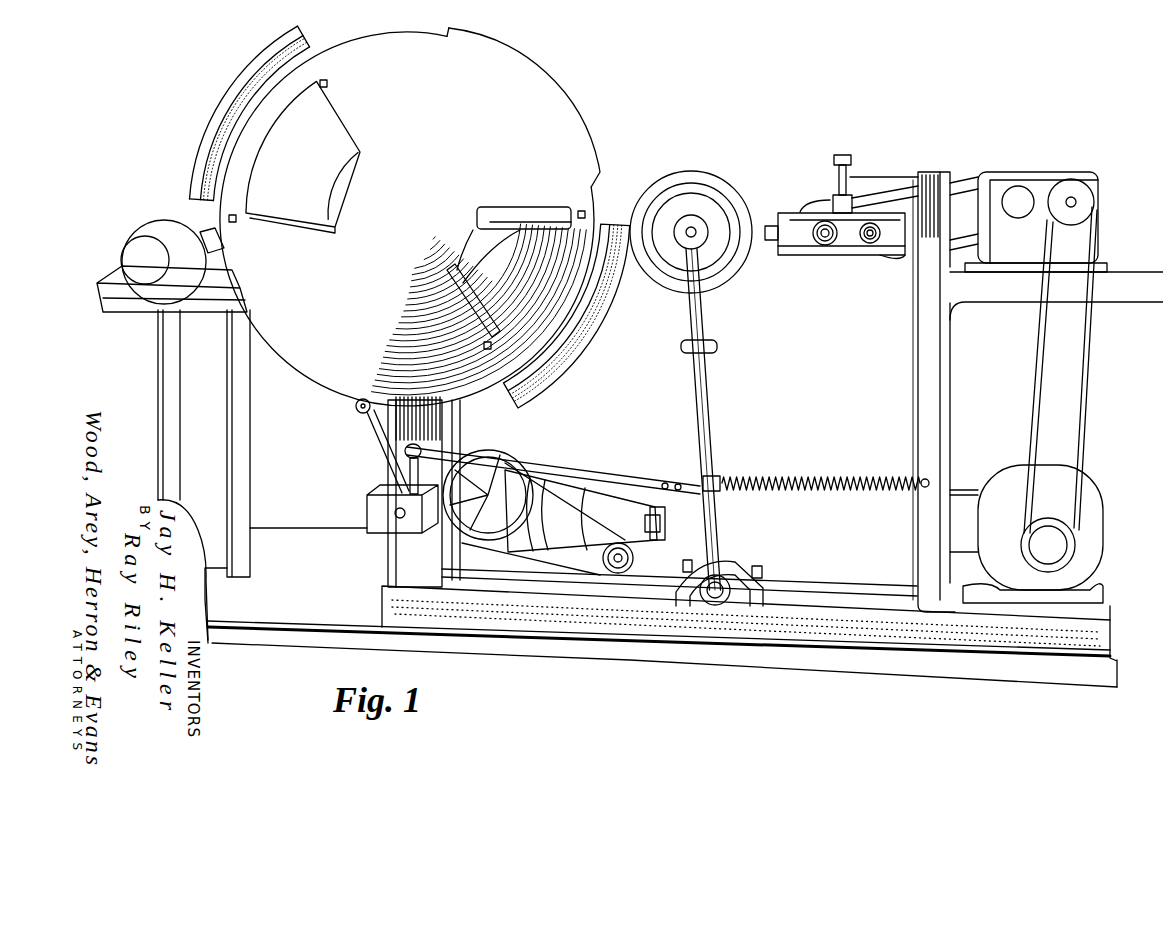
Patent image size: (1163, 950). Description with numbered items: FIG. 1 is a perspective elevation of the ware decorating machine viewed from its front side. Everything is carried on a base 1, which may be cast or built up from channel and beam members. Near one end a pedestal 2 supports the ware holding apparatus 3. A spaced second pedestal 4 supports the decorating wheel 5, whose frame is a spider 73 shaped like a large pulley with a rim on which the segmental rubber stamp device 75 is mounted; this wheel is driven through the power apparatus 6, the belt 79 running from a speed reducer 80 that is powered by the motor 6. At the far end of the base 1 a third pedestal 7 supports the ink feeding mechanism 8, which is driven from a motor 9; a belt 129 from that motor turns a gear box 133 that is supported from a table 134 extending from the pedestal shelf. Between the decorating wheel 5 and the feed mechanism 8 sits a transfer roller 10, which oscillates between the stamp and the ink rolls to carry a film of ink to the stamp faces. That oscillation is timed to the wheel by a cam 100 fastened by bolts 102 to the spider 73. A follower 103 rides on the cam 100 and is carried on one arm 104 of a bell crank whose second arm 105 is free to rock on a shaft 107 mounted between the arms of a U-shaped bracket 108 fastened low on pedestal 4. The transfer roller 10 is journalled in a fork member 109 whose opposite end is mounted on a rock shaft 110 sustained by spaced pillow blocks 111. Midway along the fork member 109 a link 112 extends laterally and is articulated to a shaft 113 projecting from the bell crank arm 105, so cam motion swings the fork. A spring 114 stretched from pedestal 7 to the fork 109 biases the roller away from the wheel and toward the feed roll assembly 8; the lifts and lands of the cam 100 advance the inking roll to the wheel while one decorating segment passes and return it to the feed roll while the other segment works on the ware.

The base 1 is at (628, 656).
The pedestal 2 is at (243, 437).
The ware holding apparatus 3 is at (210, 294).
The second pedestal 4 is at (392, 570).
The decorating wheel 5 is at (566, 118).
The power apparatus 6 is at (518, 496).
The third pedestal 7 is at (945, 433).
The ink feeding mechanism 8 is at (813, 213).
The motor 9 is at (1095, 488).
The transfer roller 10 is at (730, 195).
The spider 73 is at (353, 152).
The segmental rubber stamp device 75 is at (263, 53).
The belt 79 is at (608, 542).
The speed reducer 80 is at (661, 520).
The cam 100 is at (527, 72).
The bolts 102 is at (329, 85).
The follower 103 is at (358, 415).
The bell crank arm 104 is at (378, 447).
The second bell crank arm 105 is at (378, 470).
The shaft 107 is at (398, 518).
The U-shaped bracket 108 is at (367, 508).
The fork member 109 is at (711, 388).
The rock shaft 110 is at (714, 600).
The pillow blocks 111 is at (745, 576).
The link 112 is at (696, 478).
The shaft 113 is at (612, 475).
The spring 114 is at (808, 481).
The belt 129 is at (1083, 369).
The gear box 133 is at (1097, 172).
The table 134 is at (1005, 299).